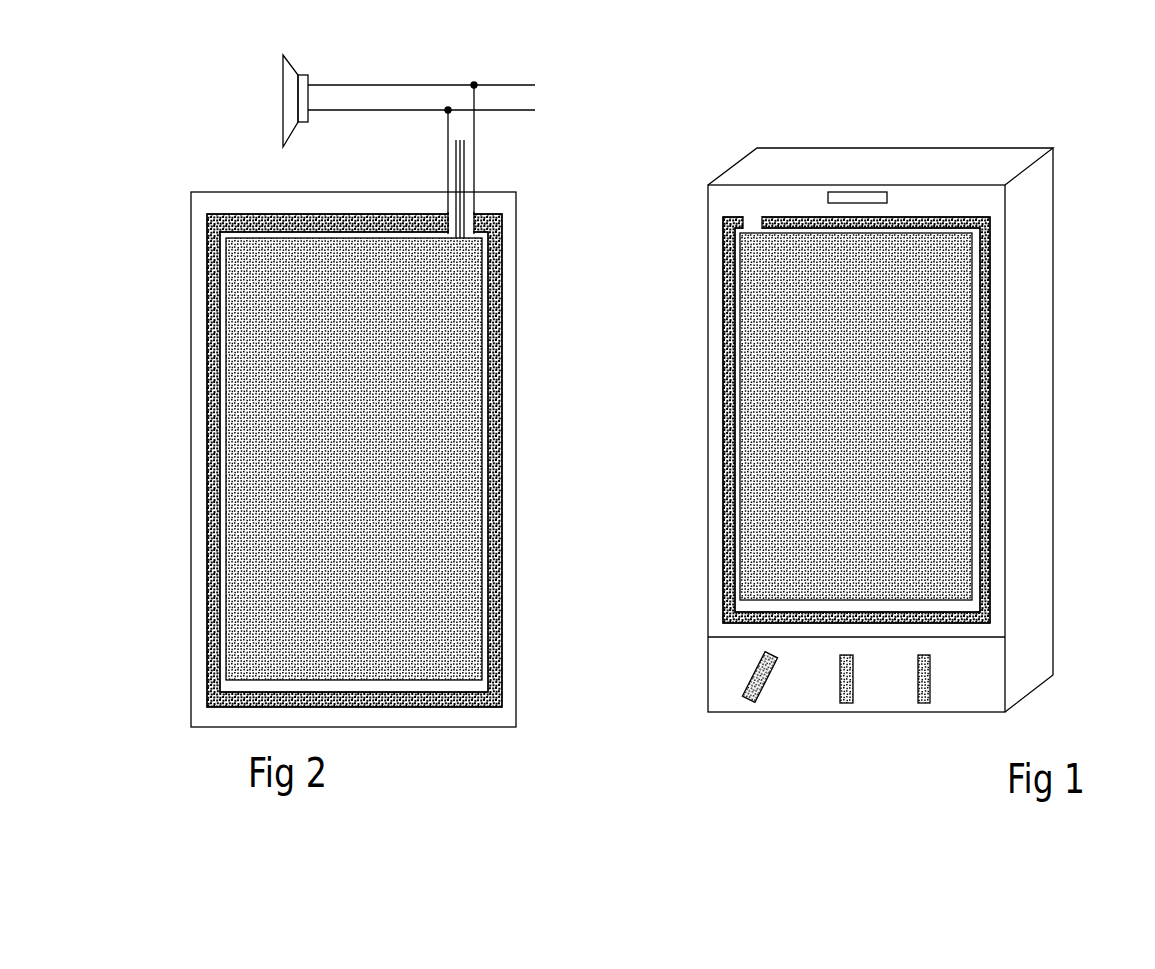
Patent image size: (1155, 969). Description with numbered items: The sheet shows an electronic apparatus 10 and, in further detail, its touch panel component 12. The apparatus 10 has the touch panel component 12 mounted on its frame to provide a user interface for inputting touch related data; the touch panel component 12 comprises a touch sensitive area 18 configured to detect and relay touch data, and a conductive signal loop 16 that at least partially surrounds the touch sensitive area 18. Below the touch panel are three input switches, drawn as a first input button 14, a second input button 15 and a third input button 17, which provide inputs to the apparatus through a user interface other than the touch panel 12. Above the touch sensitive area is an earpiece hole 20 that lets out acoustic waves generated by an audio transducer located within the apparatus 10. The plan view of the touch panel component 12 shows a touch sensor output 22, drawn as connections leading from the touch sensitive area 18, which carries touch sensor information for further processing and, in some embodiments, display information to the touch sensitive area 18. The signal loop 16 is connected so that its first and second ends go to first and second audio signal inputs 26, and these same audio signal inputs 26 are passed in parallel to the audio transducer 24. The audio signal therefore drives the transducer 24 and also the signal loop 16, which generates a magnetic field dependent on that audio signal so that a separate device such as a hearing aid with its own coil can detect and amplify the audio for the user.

In FIG. 1, the apparatus 10 is at (1015, 693).
In FIG. 2, the touch panel component 12 is at (520, 686).
In FIG. 1, the touch panel component 12 is at (716, 631).
In FIG. 1, the input button 1 14 is at (763, 693).
In FIG. 1, the input button 2 15 is at (851, 703).
In FIG. 2, the signal loop 16 is at (506, 362).
In FIG. 1, the signal loop 16 is at (722, 335).
In FIG. 1, the input button 3 17 is at (924, 703).
In FIG. 2, the touch sensitive area 18 is at (465, 502).
In FIG. 1, the touch sensitive area 18 is at (958, 428).
In FIG. 1, the earpiece hole 20 is at (864, 194).
In FIG. 2, the touch sensor output 22 is at (454, 148).
In FIG. 2, the audio transducer 24 is at (276, 100).
In FIG. 2, the audio signal input 26 is at (539, 108).